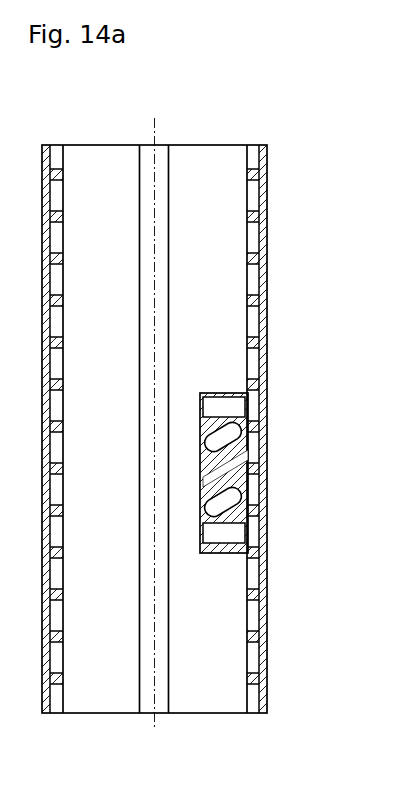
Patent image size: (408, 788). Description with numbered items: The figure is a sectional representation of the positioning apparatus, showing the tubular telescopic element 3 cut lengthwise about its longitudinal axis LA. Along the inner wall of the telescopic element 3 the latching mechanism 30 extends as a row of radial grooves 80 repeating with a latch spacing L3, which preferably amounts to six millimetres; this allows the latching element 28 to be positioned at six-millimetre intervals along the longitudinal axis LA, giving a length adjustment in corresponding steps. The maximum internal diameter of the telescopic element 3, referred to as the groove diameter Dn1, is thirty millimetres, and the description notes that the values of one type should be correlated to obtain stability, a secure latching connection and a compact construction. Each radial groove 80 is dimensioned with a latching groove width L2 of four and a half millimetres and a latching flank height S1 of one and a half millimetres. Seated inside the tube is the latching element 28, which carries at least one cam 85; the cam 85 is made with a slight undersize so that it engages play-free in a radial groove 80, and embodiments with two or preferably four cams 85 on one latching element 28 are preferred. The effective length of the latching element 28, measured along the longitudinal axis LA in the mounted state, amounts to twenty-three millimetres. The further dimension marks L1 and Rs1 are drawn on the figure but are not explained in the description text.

The telescopic element 3 is at (258, 675).
The radial groove 80 is at (258, 655).
The latching mechanism 30 is at (60, 687).
The cam 85 is at (258, 533).
The latching element 28 is at (240, 450).
The longitudinal axis LA is at (155, 675).
The groove diameter Dn1 is at (258, 89).
The projection length L1 is at (327, 474).
The latching groove width L2 is at (325, 463).
The latch spacing L3 is at (342, 348).
The latching flank height S1 is at (230, 497).
The insert length Rs1 is at (93, 390).